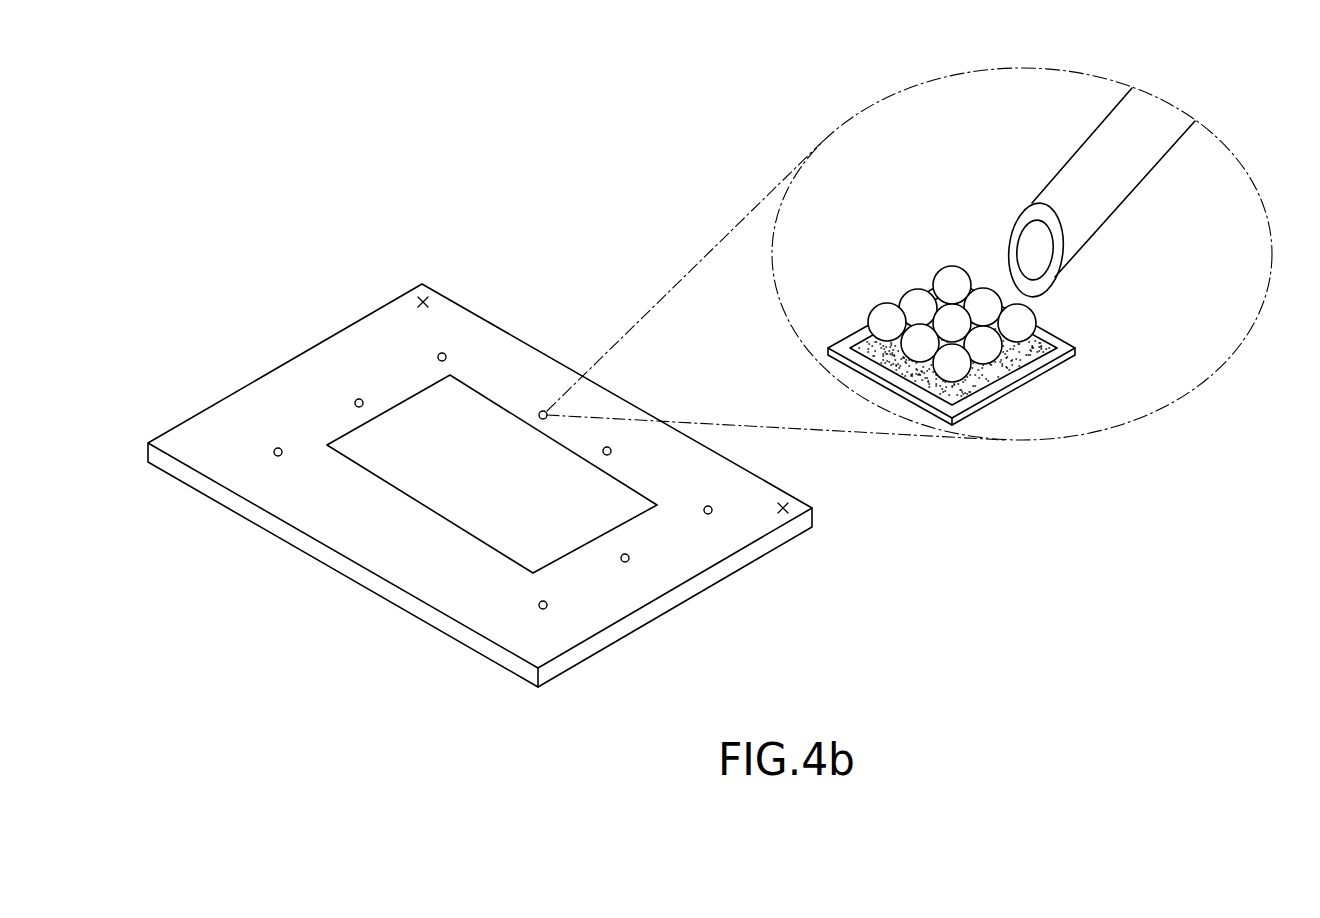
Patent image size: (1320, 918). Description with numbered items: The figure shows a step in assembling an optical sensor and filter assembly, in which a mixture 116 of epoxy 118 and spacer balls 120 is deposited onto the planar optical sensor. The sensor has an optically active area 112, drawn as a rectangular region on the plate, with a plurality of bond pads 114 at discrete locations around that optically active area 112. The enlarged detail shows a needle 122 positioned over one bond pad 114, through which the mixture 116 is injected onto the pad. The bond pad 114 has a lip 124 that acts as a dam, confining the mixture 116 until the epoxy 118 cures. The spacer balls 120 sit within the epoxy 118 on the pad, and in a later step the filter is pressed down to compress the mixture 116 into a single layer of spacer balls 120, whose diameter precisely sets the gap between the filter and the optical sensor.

The optically active area 112 is at (623, 525).
The bond pads 114 is at (277, 449).
The mixture 116 is at (1010, 317).
The epoxy 118 is at (1013, 358).
The spacer balls 120 is at (915, 287).
The needle 122 is at (1047, 185).
The lip 124 is at (837, 342).